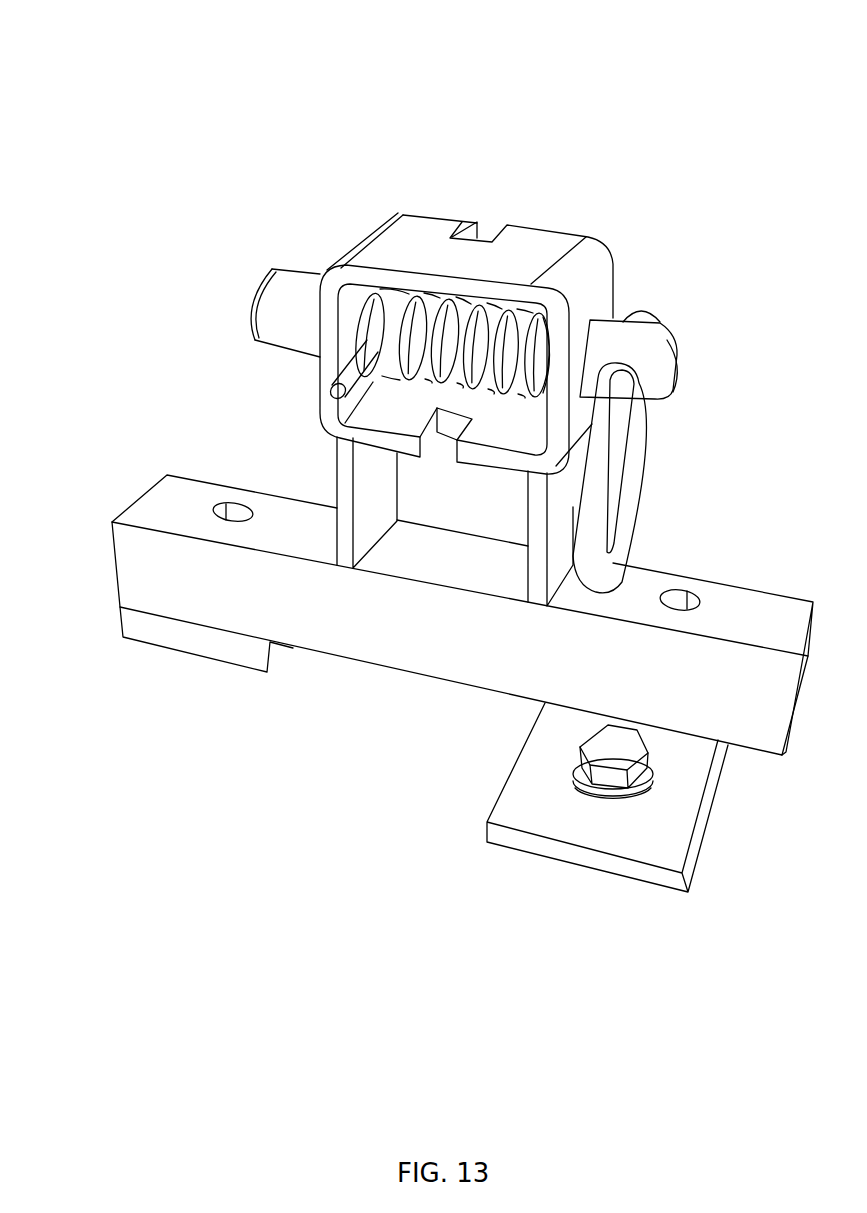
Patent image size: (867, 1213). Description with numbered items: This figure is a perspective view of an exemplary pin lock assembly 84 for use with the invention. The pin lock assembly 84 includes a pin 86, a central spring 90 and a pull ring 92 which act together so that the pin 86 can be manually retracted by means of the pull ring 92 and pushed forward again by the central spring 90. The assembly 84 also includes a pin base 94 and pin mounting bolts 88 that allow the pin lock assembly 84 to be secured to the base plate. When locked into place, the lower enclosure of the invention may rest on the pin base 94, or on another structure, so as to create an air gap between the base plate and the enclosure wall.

The pin lock assembly 84 is at (287, 45).
The pin 86 is at (252, 290).
The pin mounting bolts 88 is at (593, 748).
The central spring 90 is at (410, 327).
The pull ring 92 is at (610, 427).
The pin base 94 is at (290, 618).